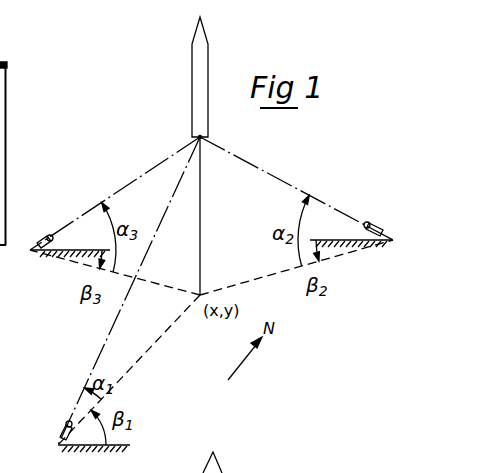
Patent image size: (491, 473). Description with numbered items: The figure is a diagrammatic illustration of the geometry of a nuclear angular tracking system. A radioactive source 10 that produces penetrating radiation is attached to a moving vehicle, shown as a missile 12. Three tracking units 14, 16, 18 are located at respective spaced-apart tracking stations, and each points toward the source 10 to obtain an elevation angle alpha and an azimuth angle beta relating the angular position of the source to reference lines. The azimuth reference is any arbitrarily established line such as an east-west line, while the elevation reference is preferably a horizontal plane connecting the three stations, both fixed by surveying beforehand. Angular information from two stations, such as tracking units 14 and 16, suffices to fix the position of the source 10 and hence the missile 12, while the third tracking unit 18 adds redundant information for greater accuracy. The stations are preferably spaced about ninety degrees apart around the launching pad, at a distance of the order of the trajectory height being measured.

The radioactive source 10 is at (201, 137).
The missile 12 is at (204, 80).
The tracking unit 14 is at (61, 428).
The tracking unit 16 is at (377, 222).
The tracking unit 18 is at (43, 236).